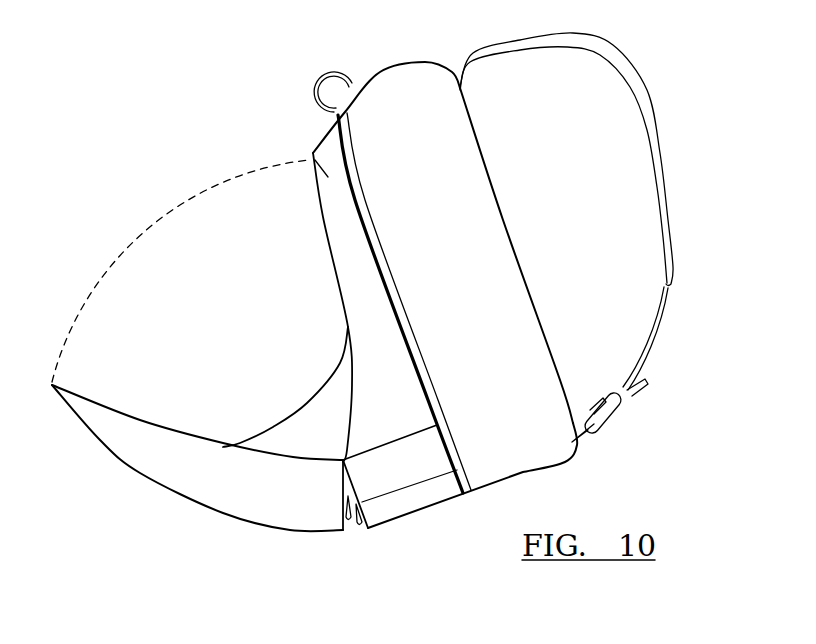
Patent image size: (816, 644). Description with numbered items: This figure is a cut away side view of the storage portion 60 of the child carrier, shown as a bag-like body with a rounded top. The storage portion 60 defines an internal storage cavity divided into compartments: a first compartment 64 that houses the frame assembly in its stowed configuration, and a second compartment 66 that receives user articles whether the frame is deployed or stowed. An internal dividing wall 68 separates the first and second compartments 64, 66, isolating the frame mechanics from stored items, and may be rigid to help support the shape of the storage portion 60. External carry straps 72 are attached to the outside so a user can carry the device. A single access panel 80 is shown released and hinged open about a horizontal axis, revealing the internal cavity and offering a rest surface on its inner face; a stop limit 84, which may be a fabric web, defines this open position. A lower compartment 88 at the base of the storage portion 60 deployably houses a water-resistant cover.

The storage portion 60 is at (380, 72).
The first compartment 64 is at (420, 98).
The second compartment 66 is at (313, 153).
The internal dividing wall 68 is at (460, 452).
The external carry straps 72 is at (647, 90).
The access panel 80 is at (147, 475).
The stop limit 84 is at (302, 398).
The lower compartment 88 is at (398, 502).